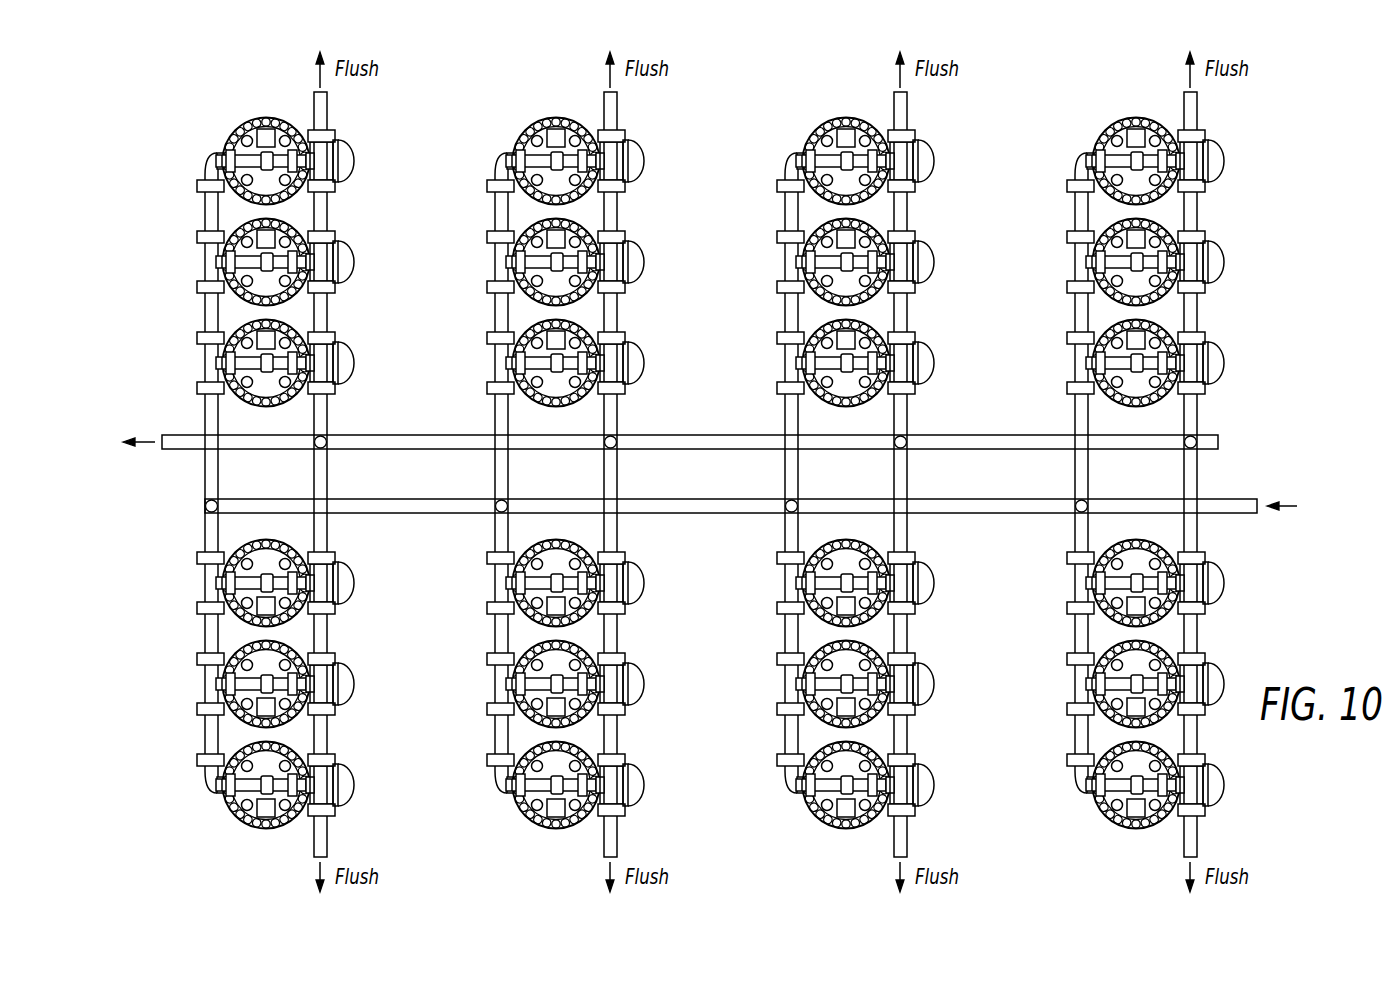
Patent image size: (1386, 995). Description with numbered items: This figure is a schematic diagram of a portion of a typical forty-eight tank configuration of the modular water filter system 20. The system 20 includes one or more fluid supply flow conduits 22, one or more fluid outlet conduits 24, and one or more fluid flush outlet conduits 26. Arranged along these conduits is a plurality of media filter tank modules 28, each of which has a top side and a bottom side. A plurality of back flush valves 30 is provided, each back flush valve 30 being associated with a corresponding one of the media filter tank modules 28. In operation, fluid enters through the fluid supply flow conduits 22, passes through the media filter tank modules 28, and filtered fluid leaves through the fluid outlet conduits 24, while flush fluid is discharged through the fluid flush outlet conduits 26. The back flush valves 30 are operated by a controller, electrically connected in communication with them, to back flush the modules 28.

The modular water filter system 20 is at (1280, 145).
The fluid supply flow conduit 22 is at (205, 210).
The fluid outlet conduit 24 is at (328, 290).
The fluid flush outlet conduit 26 is at (328, 103).
The media filter tank module 28 is at (701, 460).
The back flush valve 30 is at (235, 128).